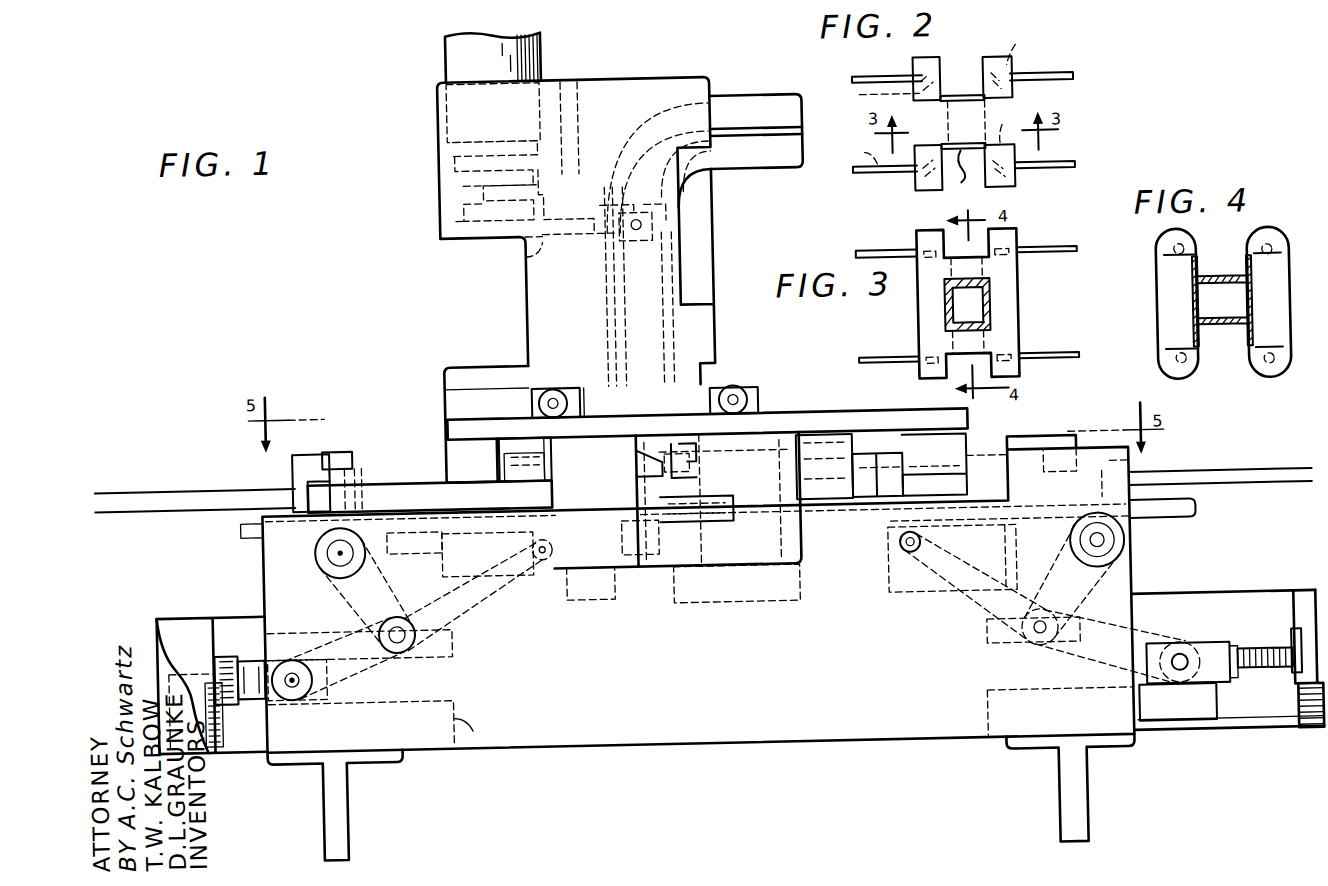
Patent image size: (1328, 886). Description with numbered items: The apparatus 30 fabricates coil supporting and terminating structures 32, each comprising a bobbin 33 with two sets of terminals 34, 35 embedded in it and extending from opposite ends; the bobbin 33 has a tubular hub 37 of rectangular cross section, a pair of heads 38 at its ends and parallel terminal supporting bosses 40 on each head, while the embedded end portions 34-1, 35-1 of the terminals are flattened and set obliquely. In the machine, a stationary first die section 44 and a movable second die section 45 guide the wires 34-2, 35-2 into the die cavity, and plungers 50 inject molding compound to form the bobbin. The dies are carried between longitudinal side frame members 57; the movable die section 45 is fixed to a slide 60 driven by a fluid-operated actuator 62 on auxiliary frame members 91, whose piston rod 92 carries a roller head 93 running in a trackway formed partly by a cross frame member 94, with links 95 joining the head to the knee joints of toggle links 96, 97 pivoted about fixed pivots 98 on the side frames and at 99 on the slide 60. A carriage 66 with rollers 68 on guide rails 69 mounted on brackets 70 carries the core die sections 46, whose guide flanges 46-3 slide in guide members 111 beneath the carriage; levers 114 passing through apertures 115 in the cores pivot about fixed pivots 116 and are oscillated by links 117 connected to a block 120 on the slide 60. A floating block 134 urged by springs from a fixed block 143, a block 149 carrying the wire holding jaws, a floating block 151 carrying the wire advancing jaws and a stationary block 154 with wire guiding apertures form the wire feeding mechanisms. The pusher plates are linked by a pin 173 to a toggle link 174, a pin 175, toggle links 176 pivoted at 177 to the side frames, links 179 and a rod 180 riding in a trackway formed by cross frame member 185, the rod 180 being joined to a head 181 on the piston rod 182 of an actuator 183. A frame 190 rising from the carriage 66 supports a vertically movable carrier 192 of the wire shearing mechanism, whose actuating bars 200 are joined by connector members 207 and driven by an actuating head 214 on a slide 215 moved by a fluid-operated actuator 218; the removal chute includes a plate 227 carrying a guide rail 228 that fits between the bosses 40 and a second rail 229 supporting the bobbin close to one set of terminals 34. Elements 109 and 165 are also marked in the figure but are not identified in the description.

In FIG. 1, the apparatus 30 is at (411, 380).
In FIG. 1, the frame 190 is at (684, 100).
In FIG. 1, the fluid-operated actuator 218 is at (456, 60).
In FIG. 1, the slide 215 is at (593, 112).
In FIG. 1, the vertically disposed plate 227 is at (788, 122).
In FIG. 1, the guide rail 228 is at (751, 140).
In FIG. 1, the second rail 229 is at (781, 166).
In FIG. 1, the connector members 207 is at (676, 232).
In FIG. 1, the actuating bars 200 is at (678, 277).
In FIG. 1, the carrier 192 is at (609, 304).
In FIG. 1, the actuating head 214 is at (531, 266).
In FIG. 1, the fixed block 143 is at (457, 460).
In FIG. 1, the carriage 66 is at (823, 427).
In FIG. 1, the rollers 68 is at (535, 398).
In FIG. 1, the guide rails 69 is at (588, 403).
In FIG. 1, the floating block 134 is at (502, 450).
In FIG. 1, the brackets 70 is at (561, 457).
In FIG. 1, the levers 114 is at (391, 489).
In FIG. 1, the block 120 is at (295, 476).
In FIG. 1, the link 117 is at (355, 456).
In FIG. 1, the wires 35-2 is at (145, 489).
In FIG. 1, the wires 34-2 is at (1237, 490).
In FIG. 1, the longitudinal side frame members 57 is at (581, 754).
In FIG. 1, the plungers 50 is at (821, 531).
In FIG. 1, the stationary first die section 44 is at (672, 620).
In FIG. 1, the second die section 45 is at (622, 615).
In FIG. 1, the fixed pivot 116 is at (758, 575).
In FIG. 1, the apertures 115 is at (658, 535).
In FIG. 1, the guide members 111 is at (686, 449).
In FIG. 1, the guide flanges 46-3 is at (661, 472).
In FIG. 1, the core die sections 46 is at (660, 533).
In FIG. 1, the floating block 151 is at (823, 455).
In FIG. 1, the stationary block 154 is at (887, 471).
In FIG. 1, the block 149 is at (962, 461).
In FIG. 1, the fixed pivots 98 is at (324, 560).
In FIG. 1, the toggle links 97 is at (498, 604).
In FIG. 1, the links 95 is at (351, 681).
In FIG. 1, the pivotal connection 99 is at (530, 578).
In FIG. 1, the toggle links 96 is at (345, 601).
In FIG. 1, the slide 60 is at (432, 553).
In FIG. 1, the slide member 109 is at (435, 538).
In FIG. 1, the cross frame member 94 is at (480, 744).
In FIG. 1, the auxiliary frame members 91 is at (222, 751).
In FIG. 1, the fluid-operated actuator 62 is at (193, 633).
In FIG. 1, the piston rod 92 is at (227, 658).
In FIG. 1, the head 93 is at (248, 698).
In FIG. 1, the pin 173 is at (878, 577).
In FIG. 1, the drive pulley 165 is at (1069, 555).
In FIG. 1, the pin 175 is at (1027, 660).
In FIG. 1, the toggle link 174 is at (953, 626).
In FIG. 1, the pivotal connection 177 is at (1125, 574).
In FIG. 1, the toggle links 176 is at (1110, 608).
In FIG. 1, the links 179 is at (1096, 677).
In FIG. 1, the rod 180 is at (1180, 674).
In FIG. 1, the head 181 is at (1220, 696).
In FIG. 1, the piston rod 182 is at (1257, 676).
In FIG. 1, the actuator 183 is at (1305, 622).
In FIG. 1, the cross frame member 185 is at (1153, 734).
In FIG. 2, the coil supporting and terminating structures 32 is at (1077, 105).
In FIG. 2, the bobbin 33 is at (1033, 166).
In FIG. 2, the terminals 34 is at (1063, 89).
In FIG. 3, the terminals 34 is at (1052, 262).
In FIG. 2, the embedded end portions 34-1 is at (1018, 82).
In FIG. 2, the terminals 35 is at (884, 88).
In FIG. 3, the terminals 35 is at (873, 262).
In FIG. 4, the terminals 35 is at (1190, 274).
In FIG. 2, the embedded end portions 35-1 is at (872, 124).
In FIG. 2, the tubular hub 37 is at (958, 133).
In FIG. 3, the tubular hub 37 is at (994, 316).
In FIG. 4, the tubular hub 37 is at (1222, 346).
In FIG. 2, the heads 38 is at (960, 177).
In FIG. 3, the heads 38 is at (1000, 282).
In FIG. 4, the heads 38 is at (1195, 290).
In FIG. 2, the terminal supporting bosses 40 is at (940, 90).
In FIG. 3, the terminal supporting bosses 40 is at (929, 333).
In FIG. 4, the terminal supporting bosses 40 is at (1163, 280).